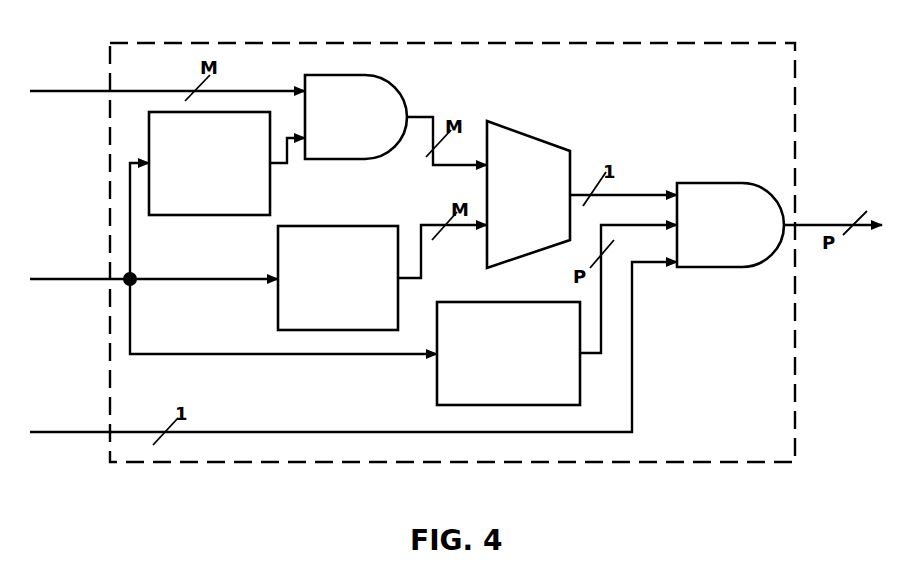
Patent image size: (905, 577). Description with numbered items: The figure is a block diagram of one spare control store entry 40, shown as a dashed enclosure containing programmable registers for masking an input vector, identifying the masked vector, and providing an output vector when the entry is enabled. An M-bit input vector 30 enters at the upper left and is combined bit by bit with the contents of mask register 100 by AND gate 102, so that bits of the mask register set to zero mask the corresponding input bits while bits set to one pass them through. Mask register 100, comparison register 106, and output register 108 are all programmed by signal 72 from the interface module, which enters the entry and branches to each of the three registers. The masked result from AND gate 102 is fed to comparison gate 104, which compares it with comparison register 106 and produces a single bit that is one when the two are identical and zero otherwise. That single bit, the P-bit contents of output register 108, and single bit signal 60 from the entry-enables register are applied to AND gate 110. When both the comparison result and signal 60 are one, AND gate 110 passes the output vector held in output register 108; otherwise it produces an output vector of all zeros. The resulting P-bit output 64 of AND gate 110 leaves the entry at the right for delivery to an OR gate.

The spare control store entry 40 is at (688, 43).
The input vector 30 is at (40, 91).
The signal 72 is at (40, 279).
The single bit signal 60 is at (40, 432).
The output 64 is at (800, 225).
The mask register 100 is at (227, 163).
The AND gate 102 is at (396, 120).
The comparison gate 104 is at (582, 194).
The comparison register 106 is at (382, 277).
The output register 108 is at (557, 315).
The AND gate 110 is at (730, 225).